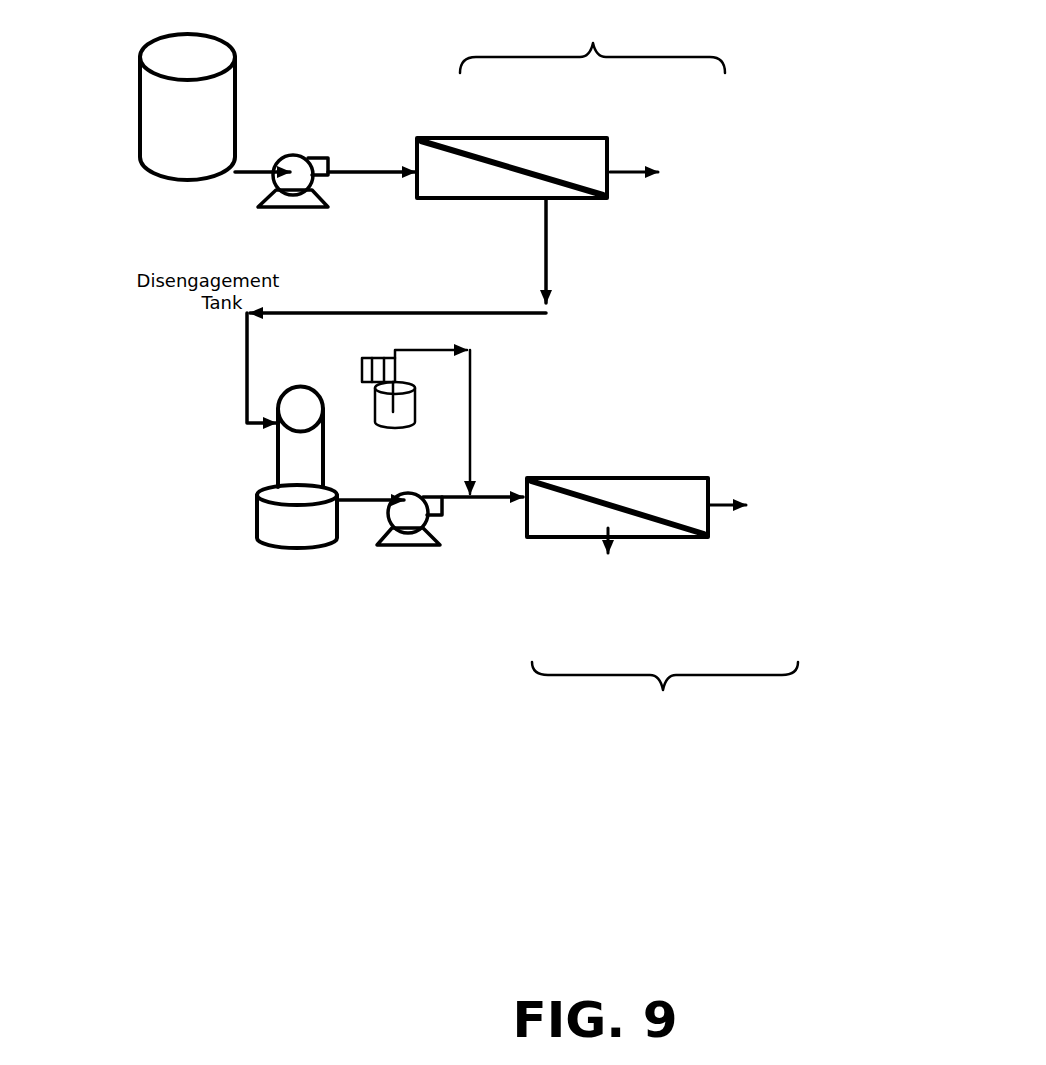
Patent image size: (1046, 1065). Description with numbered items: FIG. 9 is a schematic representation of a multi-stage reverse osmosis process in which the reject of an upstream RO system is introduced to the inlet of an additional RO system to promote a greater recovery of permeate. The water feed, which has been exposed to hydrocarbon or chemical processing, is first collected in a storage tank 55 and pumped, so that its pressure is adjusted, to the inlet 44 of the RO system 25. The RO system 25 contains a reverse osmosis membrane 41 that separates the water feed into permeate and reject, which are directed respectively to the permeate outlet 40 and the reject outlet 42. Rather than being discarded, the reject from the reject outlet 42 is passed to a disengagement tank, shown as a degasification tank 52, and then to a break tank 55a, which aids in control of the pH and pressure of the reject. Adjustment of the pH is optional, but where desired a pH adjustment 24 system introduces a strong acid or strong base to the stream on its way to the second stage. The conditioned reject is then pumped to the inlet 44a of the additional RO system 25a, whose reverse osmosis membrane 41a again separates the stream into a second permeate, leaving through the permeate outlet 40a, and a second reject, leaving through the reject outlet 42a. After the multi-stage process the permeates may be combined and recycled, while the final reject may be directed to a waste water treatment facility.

The storage tank 55 is at (128, 127).
The inlet 44 is at (351, 172).
The reverse osmosis membrane 41 is at (497, 138).
The RO system 25 is at (592, 40).
The permeate outlet 40 is at (687, 158).
The reject outlet 42 is at (418, 310).
The degasification tank 52 is at (278, 452).
The break tank 55a is at (257, 525).
The pH adjustment 24 is at (470, 440).
The inlet 44a is at (491, 495).
The reverse osmosis membrane 41a is at (601, 478).
The permeate outlet 40a is at (725, 500).
The reject outlet 42a is at (613, 546).
The additional RO system 25a is at (665, 694).